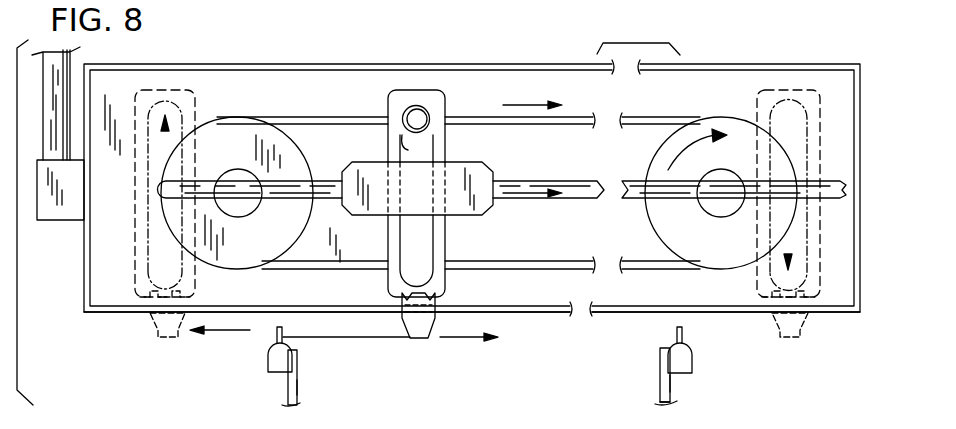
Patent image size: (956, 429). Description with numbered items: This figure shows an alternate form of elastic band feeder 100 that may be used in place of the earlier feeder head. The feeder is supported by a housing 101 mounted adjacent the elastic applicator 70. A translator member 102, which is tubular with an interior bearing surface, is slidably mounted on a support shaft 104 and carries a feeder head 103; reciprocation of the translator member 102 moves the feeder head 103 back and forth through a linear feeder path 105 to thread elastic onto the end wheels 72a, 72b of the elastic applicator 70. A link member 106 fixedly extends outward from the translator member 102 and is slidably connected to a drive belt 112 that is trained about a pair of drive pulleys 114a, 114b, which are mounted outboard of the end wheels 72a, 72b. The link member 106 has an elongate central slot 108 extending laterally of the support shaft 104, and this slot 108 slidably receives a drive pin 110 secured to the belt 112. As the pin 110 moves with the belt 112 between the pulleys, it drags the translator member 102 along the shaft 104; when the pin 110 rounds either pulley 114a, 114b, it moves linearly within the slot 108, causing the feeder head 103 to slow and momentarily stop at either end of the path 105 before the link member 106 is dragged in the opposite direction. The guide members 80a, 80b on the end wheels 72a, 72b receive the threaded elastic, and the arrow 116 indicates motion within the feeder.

The elastic band feeder 100 is at (735, 59).
The housing 101 is at (825, 314).
The translator member 102 is at (463, 160).
The feeder head 103 is at (440, 325).
The support shaft 104 is at (564, 182).
The linear feeder path 105 is at (217, 328).
The link member 106 is at (407, 88).
The central slot 108 is at (386, 118).
The drive pin 110 is at (417, 120).
The drive belt 112 is at (663, 115).
The drive pulley 114a is at (218, 118).
The drive pulley 114b is at (744, 150).
The web direction 116 is at (763, 257).
The leading guide members 80a is at (277, 332).
The second sensor 80b is at (672, 332).
The end wheel 72a is at (313, 390).
The end wheel 72b is at (685, 380).
The elastic applicator 70 is at (720, 394).